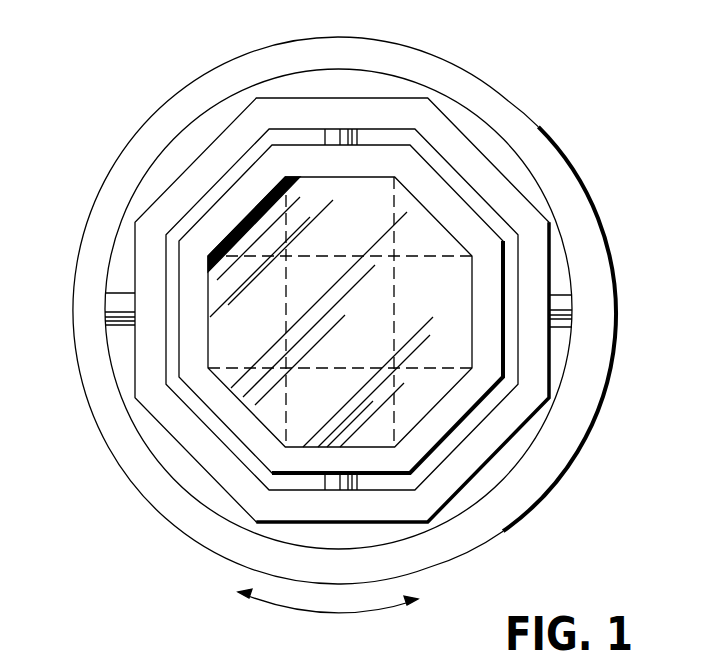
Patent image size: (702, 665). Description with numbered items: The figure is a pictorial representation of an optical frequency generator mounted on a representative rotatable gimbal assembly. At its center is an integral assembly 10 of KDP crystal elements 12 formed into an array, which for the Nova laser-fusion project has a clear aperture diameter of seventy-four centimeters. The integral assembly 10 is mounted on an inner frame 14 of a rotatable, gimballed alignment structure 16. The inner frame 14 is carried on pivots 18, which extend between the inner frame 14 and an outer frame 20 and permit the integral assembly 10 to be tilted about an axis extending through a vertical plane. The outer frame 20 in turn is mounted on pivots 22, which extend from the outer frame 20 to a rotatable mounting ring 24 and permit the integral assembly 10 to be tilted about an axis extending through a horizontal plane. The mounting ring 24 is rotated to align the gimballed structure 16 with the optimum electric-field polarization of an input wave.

The integral assembly 10 is at (346, 348).
The KDP crystal elements 12 is at (356, 208).
The inner frame 14 is at (255, 435).
The gimballed alignment structure 16 is at (583, 120).
The pivots 18 is at (322, 134).
The outer frame 20 is at (533, 365).
The pivots 22 is at (122, 328).
The rotatable mounting ring 24 is at (543, 460).